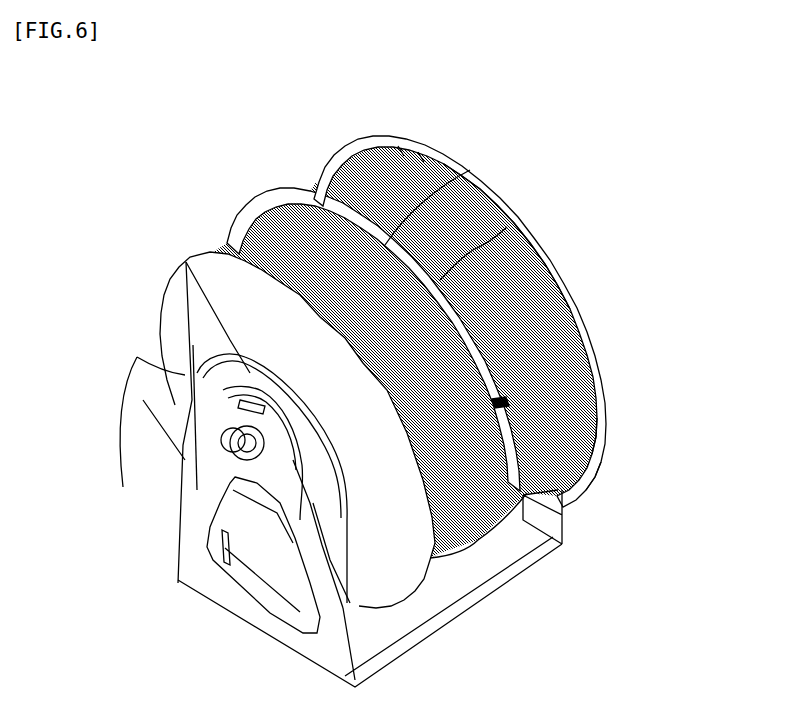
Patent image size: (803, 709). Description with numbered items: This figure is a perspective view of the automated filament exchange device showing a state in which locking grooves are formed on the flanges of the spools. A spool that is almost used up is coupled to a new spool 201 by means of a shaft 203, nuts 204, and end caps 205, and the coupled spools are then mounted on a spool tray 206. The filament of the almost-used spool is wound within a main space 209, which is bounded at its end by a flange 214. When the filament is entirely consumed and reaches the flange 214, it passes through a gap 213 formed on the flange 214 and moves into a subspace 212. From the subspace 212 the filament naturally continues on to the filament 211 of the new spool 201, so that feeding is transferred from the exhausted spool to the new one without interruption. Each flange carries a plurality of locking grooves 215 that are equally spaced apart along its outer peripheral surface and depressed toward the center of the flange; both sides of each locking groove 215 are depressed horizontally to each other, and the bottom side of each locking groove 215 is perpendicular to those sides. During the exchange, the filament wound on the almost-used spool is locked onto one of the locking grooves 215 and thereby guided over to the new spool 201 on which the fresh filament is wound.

The new spool 201 is at (177, 227).
The shaft 203 is at (230, 449).
The nuts 204 is at (247, 438).
The end caps 205 is at (263, 410).
The spool tray 206 is at (188, 532).
The main space 209 is at (313, 185).
The filament of the new spool 211 is at (445, 278).
The subspace 212 is at (443, 152).
The gap 213 is at (497, 405).
The flange 214 is at (523, 494).
The locking grooves 215 is at (590, 458).